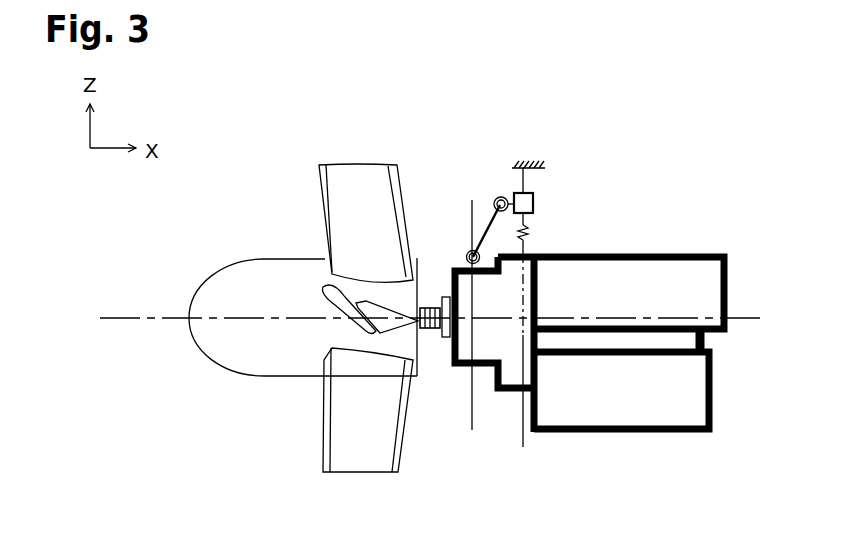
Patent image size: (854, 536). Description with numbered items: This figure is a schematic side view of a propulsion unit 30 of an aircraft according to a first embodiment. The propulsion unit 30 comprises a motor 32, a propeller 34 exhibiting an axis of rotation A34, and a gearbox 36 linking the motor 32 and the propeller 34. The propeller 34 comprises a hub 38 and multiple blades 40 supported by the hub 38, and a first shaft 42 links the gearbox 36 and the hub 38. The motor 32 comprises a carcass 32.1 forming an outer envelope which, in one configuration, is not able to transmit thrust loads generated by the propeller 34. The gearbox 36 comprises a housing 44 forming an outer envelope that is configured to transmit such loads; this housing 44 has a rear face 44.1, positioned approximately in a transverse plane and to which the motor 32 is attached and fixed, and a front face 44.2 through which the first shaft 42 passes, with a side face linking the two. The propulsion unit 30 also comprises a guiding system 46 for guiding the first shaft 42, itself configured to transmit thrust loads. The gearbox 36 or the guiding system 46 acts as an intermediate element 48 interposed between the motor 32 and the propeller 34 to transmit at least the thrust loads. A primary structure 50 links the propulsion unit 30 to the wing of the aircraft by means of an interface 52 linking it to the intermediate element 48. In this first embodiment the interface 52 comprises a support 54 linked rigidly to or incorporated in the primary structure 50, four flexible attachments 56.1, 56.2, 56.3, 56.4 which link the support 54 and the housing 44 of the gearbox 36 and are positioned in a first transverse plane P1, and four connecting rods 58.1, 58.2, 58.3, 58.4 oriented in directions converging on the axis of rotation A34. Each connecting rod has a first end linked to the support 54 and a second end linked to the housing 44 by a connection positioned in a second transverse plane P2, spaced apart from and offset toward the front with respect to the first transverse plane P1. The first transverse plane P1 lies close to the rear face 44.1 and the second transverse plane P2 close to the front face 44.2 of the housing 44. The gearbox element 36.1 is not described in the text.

The propulsion unit 30 is at (222, 443).
The motor 32 is at (648, 252).
The carcass 32.1 is at (697, 252).
The propeller 34 is at (270, 255).
The gearbox 36 is at (492, 392).
The bearing seat 36.1 is at (503, 393).
The hub 38 is at (345, 335).
The blades 40 is at (345, 188).
The first shaft 42 is at (437, 302).
The housing 44 is at (467, 367).
The rear face 44.1 is at (537, 280).
The front face 44.2 is at (452, 348).
The guiding system 46 is at (418, 320).
The intermediate element 48 is at (441, 250).
The primary structure 50 is at (504, 150).
The interface 52 is at (455, 190).
The support 54 is at (539, 178).
The flexible attachment 56.1 is at (626, 198).
The flexible attachment 56.2 is at (626, 198).
The flexible attachment 56.3 is at (626, 198).
The flexible attachment 56.4 is at (555, 214).
The connecting rod 58.1 is at (453, 144).
The connecting rod 58.2 is at (453, 144).
The connecting rod 58.3 is at (453, 144).
The connecting rod 58.4 is at (484, 202).
The axis of rotation A34 is at (118, 318).
The first transverse plane P1 is at (521, 412).
The second transverse plane P2 is at (472, 415).